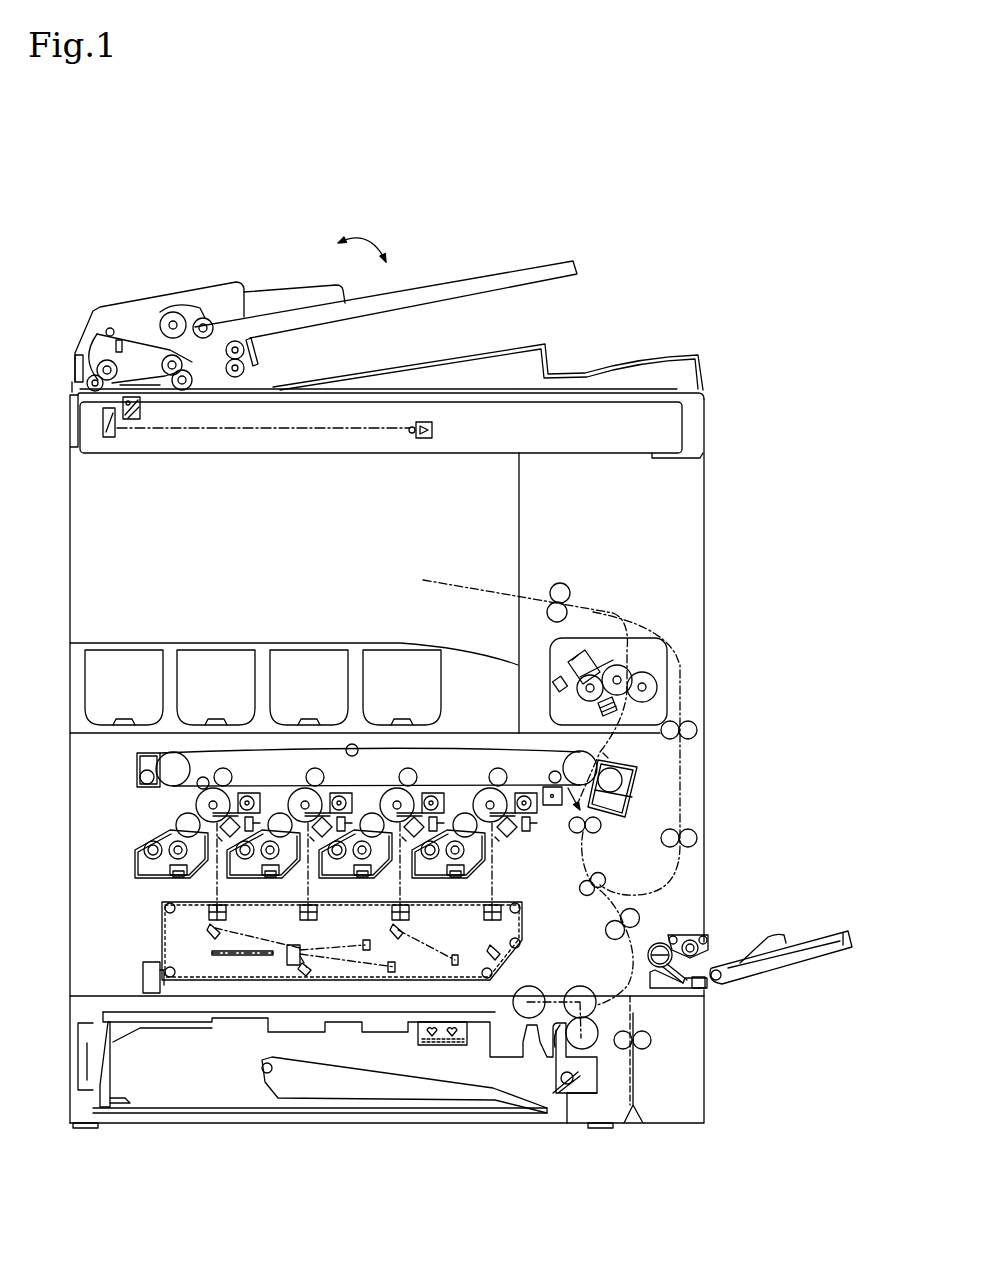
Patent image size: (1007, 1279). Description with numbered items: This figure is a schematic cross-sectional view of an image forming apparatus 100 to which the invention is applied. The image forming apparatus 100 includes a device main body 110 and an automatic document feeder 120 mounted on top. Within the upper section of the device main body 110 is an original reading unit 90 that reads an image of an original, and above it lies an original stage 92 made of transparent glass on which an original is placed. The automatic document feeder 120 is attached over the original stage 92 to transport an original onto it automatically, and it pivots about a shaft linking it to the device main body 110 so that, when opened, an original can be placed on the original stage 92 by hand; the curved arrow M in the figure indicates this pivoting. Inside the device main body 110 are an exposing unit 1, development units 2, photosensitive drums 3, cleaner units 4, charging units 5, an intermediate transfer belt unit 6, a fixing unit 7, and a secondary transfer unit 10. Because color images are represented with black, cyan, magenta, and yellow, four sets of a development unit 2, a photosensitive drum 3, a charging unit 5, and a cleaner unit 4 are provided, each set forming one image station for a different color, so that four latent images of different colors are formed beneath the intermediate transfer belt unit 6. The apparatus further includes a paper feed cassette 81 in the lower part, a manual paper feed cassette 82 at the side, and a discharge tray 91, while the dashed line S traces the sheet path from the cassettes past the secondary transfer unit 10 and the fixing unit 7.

The exposing unit 1 is at (523, 920).
The development unit 2 is at (144, 843).
The photosensitive drum 3 is at (198, 806).
The cleaner unit 4 is at (260, 800).
The charging unit 5 is at (215, 865).
The intermediate transfer belt unit 6 is at (448, 744).
The fixing unit 7 is at (676, 663).
The secondary transfer unit 10 is at (612, 779).
The paper feed cassette 81 is at (333, 1073).
The manual paper feed cassette 82 is at (792, 937).
The original reading unit 90 is at (681, 425).
The discharge tray 91 is at (297, 640).
The original stage 92 is at (449, 392).
The image forming apparatus 100 is at (652, 320).
The device main body 110 is at (69, 606).
The automatic document feeder 120 is at (174, 289).
The document M is at (364, 237).
The sheet S is at (575, 885).